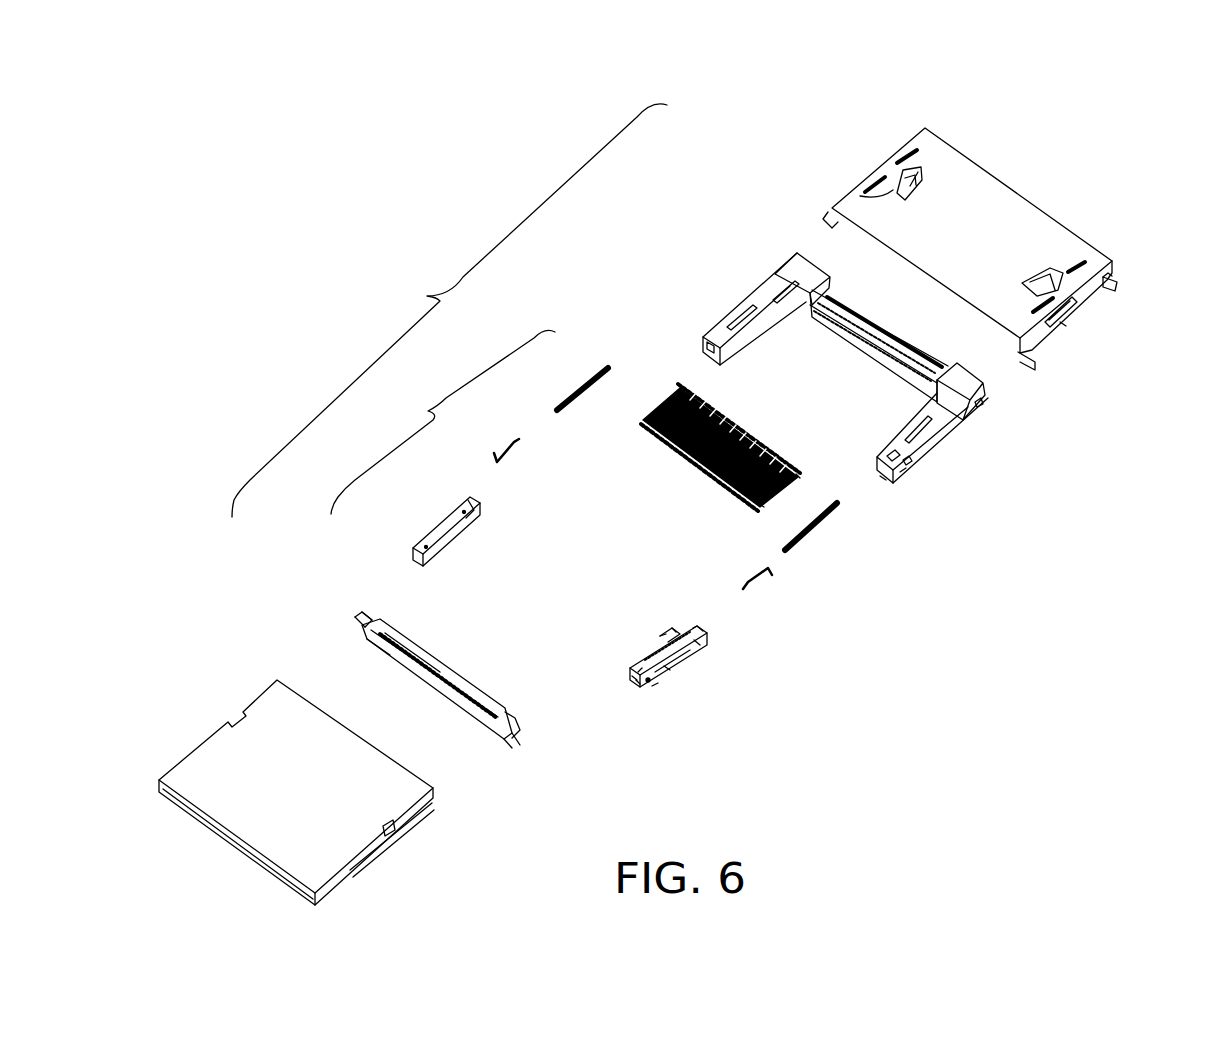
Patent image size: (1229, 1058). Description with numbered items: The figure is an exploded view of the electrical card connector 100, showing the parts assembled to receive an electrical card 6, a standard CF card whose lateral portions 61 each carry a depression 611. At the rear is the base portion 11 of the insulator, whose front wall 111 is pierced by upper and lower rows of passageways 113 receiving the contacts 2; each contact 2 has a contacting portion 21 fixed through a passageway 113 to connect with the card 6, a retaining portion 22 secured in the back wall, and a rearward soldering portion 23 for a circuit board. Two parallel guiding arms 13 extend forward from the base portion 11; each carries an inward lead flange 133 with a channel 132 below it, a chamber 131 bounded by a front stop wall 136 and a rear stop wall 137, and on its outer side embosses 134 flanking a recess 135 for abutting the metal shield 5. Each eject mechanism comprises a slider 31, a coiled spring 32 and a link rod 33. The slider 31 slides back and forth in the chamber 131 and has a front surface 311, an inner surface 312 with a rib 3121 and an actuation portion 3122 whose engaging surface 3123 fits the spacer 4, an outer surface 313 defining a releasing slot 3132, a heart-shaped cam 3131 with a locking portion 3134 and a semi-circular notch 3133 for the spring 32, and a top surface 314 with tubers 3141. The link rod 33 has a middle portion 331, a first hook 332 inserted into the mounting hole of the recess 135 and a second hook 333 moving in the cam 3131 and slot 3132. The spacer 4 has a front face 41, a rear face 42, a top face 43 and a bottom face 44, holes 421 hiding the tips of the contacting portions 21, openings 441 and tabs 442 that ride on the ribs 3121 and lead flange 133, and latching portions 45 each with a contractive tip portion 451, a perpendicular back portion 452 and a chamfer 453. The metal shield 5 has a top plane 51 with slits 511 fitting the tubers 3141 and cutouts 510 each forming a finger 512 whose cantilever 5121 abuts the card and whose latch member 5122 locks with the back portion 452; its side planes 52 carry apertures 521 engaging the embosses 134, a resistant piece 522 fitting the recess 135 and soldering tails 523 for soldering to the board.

The electrical card connector 100 is at (449, 310).
The metal shield 5 is at (795, 137).
The top plane 51 is at (1013, 198).
The cutouts 510 is at (897, 167).
The longitudinal slits 511 is at (896, 158).
The finger 512 is at (882, 188).
The cantilever 5121 is at (893, 188).
The latch member 5122 is at (905, 172).
The side planes 52 is at (1075, 312).
The apertures 521 is at (1112, 276).
The resistant piece 522 is at (1064, 325).
The soldering tails 523 is at (1117, 288).
The guiding arms 13 is at (760, 307).
The rear stop wall 137 is at (803, 267).
The chamber 131 is at (773, 307).
The recess 135 is at (920, 440).
The front stop wall 136 is at (893, 450).
The lead flange 133 is at (908, 464).
The channel 132 is at (875, 478).
The embosses 134 is at (903, 473).
The base portion 11 is at (887, 332).
The passageways 113 is at (862, 344).
The front wall 111 is at (900, 378).
The contacts 2 is at (672, 378).
The retaining portion 22 is at (763, 442).
The soldering portion 23 is at (800, 480).
The contacting portion 21 is at (763, 505).
The coiled spring 32 is at (575, 407).
The link rod 33 is at (503, 452).
The middle portion 331 is at (513, 440).
The first hook 332 is at (520, 445).
The second hook 333 is at (497, 468).
The slider 31 is at (466, 520).
The inner surface 312 is at (452, 542).
The front surface 311 is at (634, 688).
The outer surface 313 is at (667, 684).
The top surface 314 is at (695, 631).
The rib 3121 is at (637, 684).
The actuation portion 3122 is at (674, 632).
The engaging surface 3123 is at (665, 634).
The heart-shaped cam 3131 is at (656, 688).
The releasing slot 3132 is at (667, 668).
The semi-circular notch 3133 is at (697, 645).
The locking portion 3134 is at (648, 688).
The tubers 3141 is at (640, 670).
The spacer 4 is at (320, 598).
The front face 41 is at (470, 720).
The rear face 42 is at (460, 678).
The top face 43 is at (420, 660).
The holes 421 is at (442, 690).
The bottom face 44 is at (390, 664).
The openings 441 is at (512, 748).
The tabs 442 is at (520, 745).
The latching portions 45 is at (514, 724).
The contractive tip portion 451 is at (368, 622).
The perpendicular back portion 452 is at (370, 630).
The chamfer 453 is at (365, 633).
The electrical card 6 is at (210, 695).
The lateral portions 61 is at (345, 880).
The depression 611 is at (400, 832).